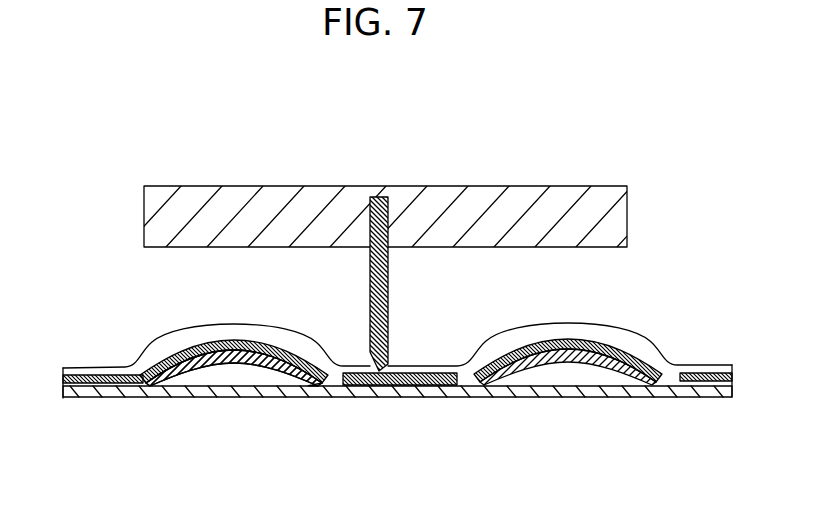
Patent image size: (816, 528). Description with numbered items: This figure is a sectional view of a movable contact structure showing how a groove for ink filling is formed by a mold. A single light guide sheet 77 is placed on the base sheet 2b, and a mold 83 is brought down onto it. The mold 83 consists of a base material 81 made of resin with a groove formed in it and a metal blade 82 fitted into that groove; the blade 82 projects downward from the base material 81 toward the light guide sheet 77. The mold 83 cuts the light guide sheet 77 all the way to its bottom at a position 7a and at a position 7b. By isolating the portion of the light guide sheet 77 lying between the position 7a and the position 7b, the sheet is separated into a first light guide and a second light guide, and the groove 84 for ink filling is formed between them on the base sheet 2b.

The mold 83 is at (477, 114).
The base material 81 is at (445, 198).
The metal blade 82 is at (377, 196).
The light guide sheet 77 is at (633, 340).
The base sheet 2b is at (283, 368).
The position 7a is at (370, 384).
The groove for ink filling 84 is at (410, 381).
The position 7b is at (455, 383).